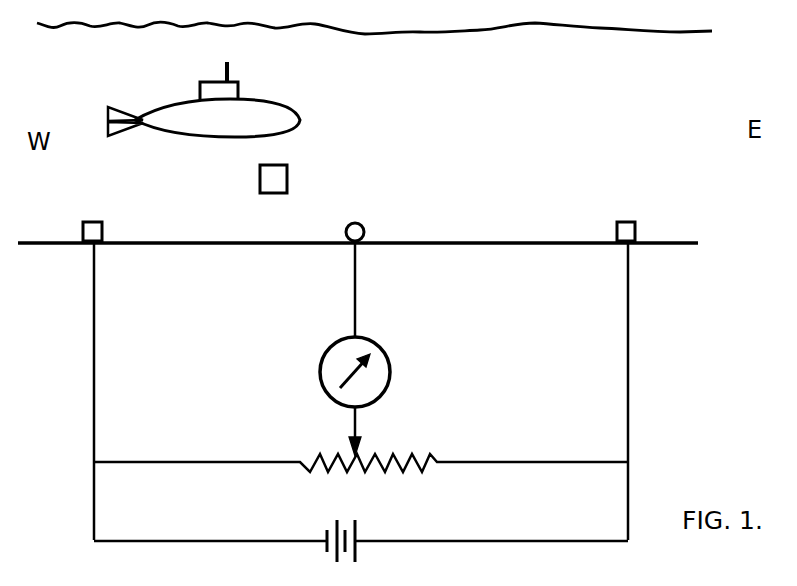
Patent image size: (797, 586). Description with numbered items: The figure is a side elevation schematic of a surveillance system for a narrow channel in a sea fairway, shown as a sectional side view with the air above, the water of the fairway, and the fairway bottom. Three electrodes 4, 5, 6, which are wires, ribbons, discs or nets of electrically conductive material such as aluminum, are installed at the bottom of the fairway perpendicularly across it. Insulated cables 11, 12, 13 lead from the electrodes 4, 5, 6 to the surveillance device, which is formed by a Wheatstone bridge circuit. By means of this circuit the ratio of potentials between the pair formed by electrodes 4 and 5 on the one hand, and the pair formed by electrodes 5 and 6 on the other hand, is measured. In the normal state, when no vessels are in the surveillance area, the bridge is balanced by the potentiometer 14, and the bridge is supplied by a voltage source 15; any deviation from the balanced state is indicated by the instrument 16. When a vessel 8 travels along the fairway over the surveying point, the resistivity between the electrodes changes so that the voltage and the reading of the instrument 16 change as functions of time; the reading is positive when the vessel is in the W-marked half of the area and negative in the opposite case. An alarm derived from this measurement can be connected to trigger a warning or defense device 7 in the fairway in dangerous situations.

The electrode 4 is at (129, 195).
The electrode 5 is at (395, 203).
The electrode 6 is at (672, 202).
The warning or defense device 7 is at (287, 175).
The vessel 8 is at (300, 81).
The insulated cable 11 is at (94, 333).
The insulated cable 12 is at (399, 291).
The insulated cable 13 is at (679, 297).
The potentiometer 14 is at (430, 417).
The voltage source 15 is at (404, 509).
The instrument 16 is at (442, 342).